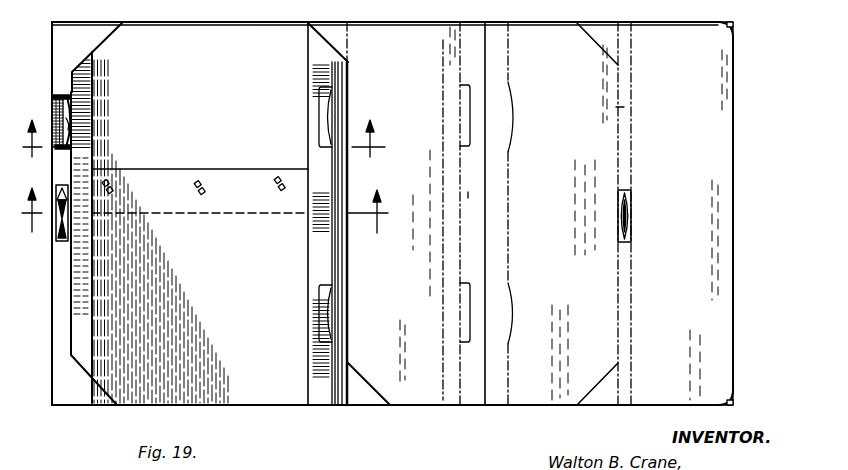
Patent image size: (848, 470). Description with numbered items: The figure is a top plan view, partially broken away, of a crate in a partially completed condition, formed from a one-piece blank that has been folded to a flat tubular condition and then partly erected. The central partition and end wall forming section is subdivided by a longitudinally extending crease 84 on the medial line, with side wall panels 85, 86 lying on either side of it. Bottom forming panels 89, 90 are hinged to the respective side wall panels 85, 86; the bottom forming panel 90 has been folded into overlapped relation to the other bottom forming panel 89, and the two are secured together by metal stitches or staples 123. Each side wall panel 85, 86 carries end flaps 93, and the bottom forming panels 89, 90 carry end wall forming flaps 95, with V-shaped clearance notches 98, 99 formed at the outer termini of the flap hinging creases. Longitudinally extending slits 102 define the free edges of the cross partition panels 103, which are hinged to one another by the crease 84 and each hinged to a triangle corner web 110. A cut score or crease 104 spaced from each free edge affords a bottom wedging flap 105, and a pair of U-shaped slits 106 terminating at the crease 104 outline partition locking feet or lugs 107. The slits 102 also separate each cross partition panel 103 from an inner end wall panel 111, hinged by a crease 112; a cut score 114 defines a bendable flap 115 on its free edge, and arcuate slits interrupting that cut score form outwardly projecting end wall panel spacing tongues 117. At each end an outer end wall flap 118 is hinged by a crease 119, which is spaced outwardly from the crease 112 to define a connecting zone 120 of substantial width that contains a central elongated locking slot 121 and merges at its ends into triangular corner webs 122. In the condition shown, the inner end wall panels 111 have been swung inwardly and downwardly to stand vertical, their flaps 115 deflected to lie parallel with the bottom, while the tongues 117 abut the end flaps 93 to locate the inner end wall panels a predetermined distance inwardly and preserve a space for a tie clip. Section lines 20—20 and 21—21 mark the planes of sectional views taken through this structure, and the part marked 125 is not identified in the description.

The section line 20- 20 is at (204, 151).
The section line 21- 21 is at (205, 220).
The longitudinally extending crease 84 is at (350, 281).
The side wall panel 85 is at (160, 402).
The side wall panel 86 is at (226, 23).
The bottom forming panel 89 is at (283, 385).
The bottom forming panel 90 is at (137, 37).
The end flap 93 is at (734, 18).
The end wall forming flap 95 is at (736, 28).
The V-shaped clearance notch 98 is at (67, 230).
The V-shaped clearance notch 99 is at (68, 197).
The longitudinally extending slit 102 is at (485, 165).
The cross partition panel 103 is at (415, 397).
The cut score or crease 104 is at (461, 183).
The bottom wedging flap 105 is at (311, 238).
The U-shaped slit 106 is at (322, 97).
The partition locking lug 107 is at (466, 110).
The triangle corner web 110 is at (325, 26).
The inner end wall panel 111 is at (72, 148).
The longitudinally extending crease 112 is at (620, 113).
The cut score 114 is at (507, 366).
The bendable flap 115 is at (88, 293).
The end wall panel spacing tongue 117 is at (68, 112).
The outer end wall flap 118 is at (52, 98).
The crease 119 is at (632, 72).
The connecting zone 120 is at (63, 316).
The locking slot 121 is at (69, 216).
The triangular corner web 122 is at (73, 395).
The metal stitches or staples 123 is at (280, 185).
The flange 125 is at (70, 136).